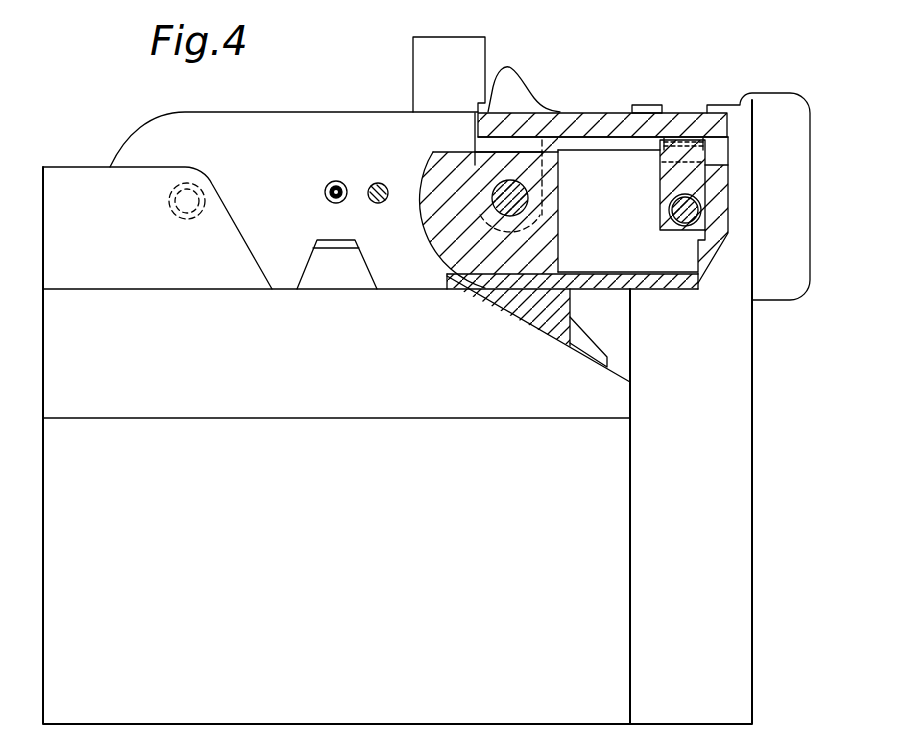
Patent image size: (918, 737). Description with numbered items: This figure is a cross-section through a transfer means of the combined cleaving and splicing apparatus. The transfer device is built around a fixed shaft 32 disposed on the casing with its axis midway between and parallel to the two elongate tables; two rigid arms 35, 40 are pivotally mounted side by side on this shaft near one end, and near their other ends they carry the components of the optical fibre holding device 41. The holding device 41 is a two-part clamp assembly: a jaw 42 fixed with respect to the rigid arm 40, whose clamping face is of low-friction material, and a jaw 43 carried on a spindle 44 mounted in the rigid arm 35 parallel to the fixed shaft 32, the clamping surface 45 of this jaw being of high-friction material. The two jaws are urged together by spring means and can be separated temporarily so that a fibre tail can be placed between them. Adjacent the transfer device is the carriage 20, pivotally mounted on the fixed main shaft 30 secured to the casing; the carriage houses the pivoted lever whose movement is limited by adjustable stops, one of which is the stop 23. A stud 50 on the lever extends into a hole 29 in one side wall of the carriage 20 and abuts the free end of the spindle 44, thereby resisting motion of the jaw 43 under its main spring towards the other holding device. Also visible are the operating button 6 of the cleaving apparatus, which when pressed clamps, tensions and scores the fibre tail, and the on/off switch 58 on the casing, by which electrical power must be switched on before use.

The operating button 6 is at (781, 278).
The carriage 20 is at (314, 110).
The adjustable stop 23 is at (377, 181).
The hole 29 is at (328, 200).
The main shaft 30 is at (178, 210).
The fixed shaft 32 is at (495, 215).
The rigid arm 35 is at (700, 285).
The rigid arm 40 is at (591, 112).
The holding device 41 is at (714, 145).
The jaw 42 is at (683, 140).
The jaw 43 is at (662, 180).
The spindle 44 is at (672, 203).
The clamping surface 45 is at (672, 146).
The stud 50 is at (336, 180).
The on/off switch 58 is at (588, 340).